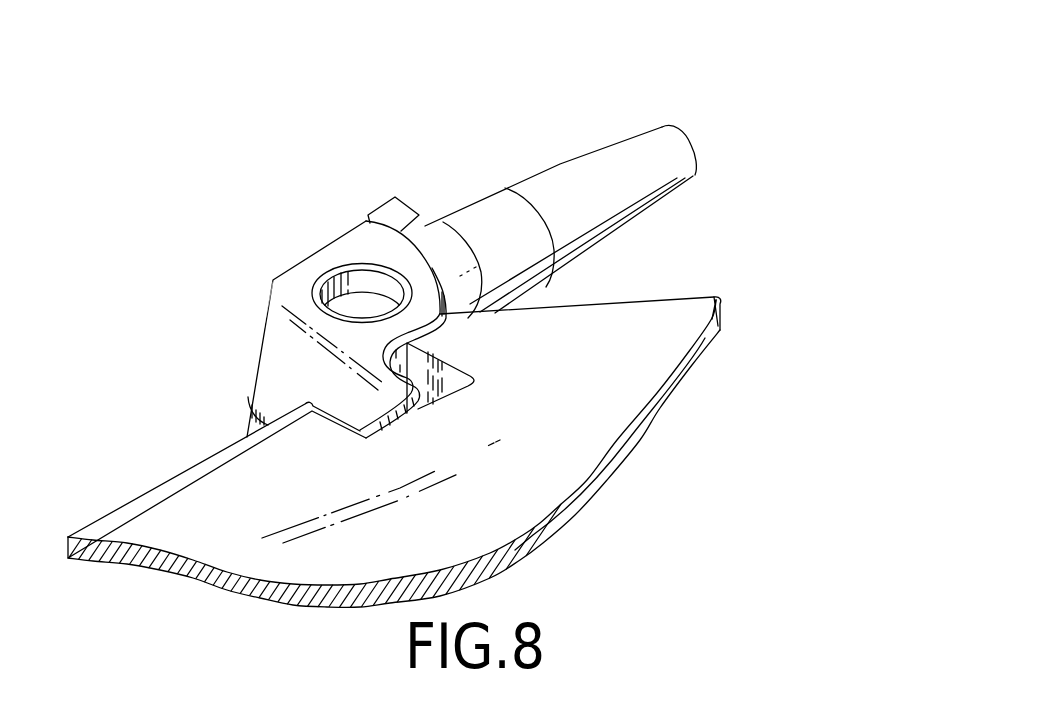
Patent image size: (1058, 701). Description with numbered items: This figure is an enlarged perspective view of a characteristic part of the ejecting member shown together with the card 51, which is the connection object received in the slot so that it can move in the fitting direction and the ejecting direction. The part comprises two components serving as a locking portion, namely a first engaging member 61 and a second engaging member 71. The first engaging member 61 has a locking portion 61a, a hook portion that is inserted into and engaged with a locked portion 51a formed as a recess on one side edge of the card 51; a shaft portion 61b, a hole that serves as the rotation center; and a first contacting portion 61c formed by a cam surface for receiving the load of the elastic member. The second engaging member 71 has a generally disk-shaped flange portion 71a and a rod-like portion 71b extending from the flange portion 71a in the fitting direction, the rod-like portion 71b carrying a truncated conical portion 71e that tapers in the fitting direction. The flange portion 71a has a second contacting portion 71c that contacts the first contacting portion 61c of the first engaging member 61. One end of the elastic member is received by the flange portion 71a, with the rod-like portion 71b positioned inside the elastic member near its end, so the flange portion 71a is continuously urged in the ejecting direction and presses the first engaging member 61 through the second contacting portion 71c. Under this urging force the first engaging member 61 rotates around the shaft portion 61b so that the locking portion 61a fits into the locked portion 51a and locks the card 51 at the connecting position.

The card 51 is at (163, 481).
The locked portion 51a is at (443, 407).
The first engaging member 61 is at (296, 254).
The locking portion 61a is at (293, 350).
The shaft portion 61b is at (348, 263).
The first contacting portion 61c is at (361, 221).
The second engaging member 71 is at (559, 184).
The flange portion 71a is at (430, 225).
The rod-like portion 71b is at (488, 224).
The second contacting portion 71c is at (570, 288).
The truncated conical portion 71e is at (622, 165).